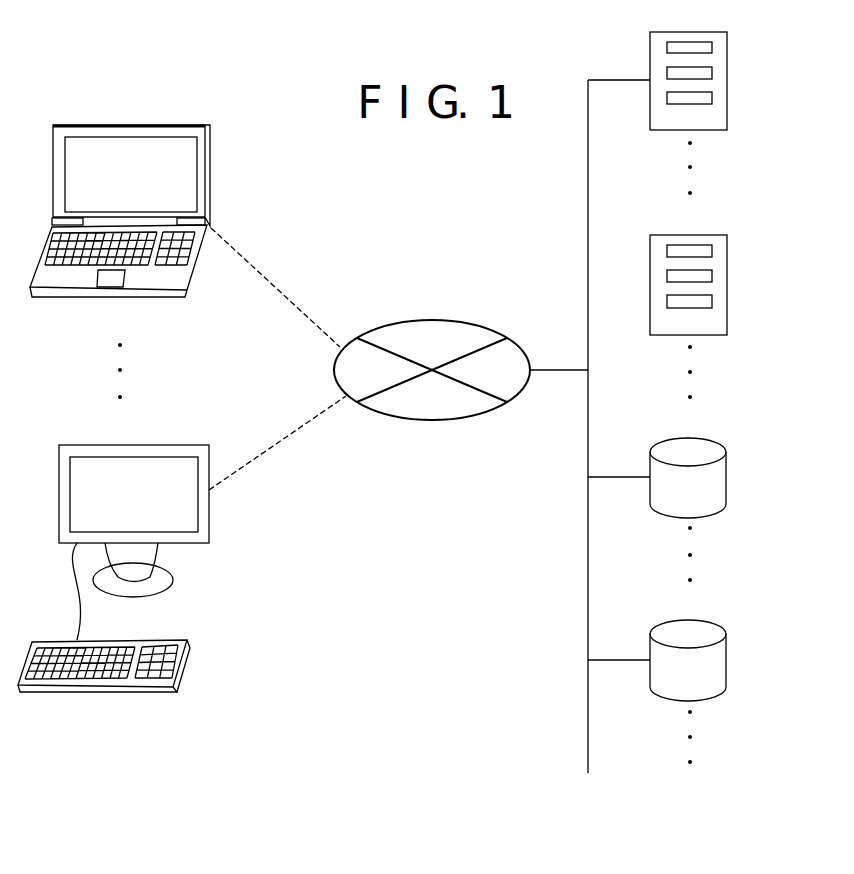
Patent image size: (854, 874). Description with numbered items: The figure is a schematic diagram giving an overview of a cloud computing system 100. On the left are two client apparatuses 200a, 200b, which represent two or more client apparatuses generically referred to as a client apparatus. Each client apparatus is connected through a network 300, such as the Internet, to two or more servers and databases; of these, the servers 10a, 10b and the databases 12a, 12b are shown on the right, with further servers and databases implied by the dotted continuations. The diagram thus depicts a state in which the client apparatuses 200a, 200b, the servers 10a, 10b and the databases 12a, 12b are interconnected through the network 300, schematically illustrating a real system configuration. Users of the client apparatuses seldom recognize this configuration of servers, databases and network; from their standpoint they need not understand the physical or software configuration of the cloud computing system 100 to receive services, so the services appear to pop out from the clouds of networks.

The cloud computing system 100 is at (432, 838).
The client apparatus 200a is at (168, 124).
The client apparatus 200b is at (183, 425).
The network 300 is at (433, 320).
The server 10a is at (727, 78).
The server 10b is at (727, 279).
The database 12a is at (728, 474).
The database 12b is at (727, 658).